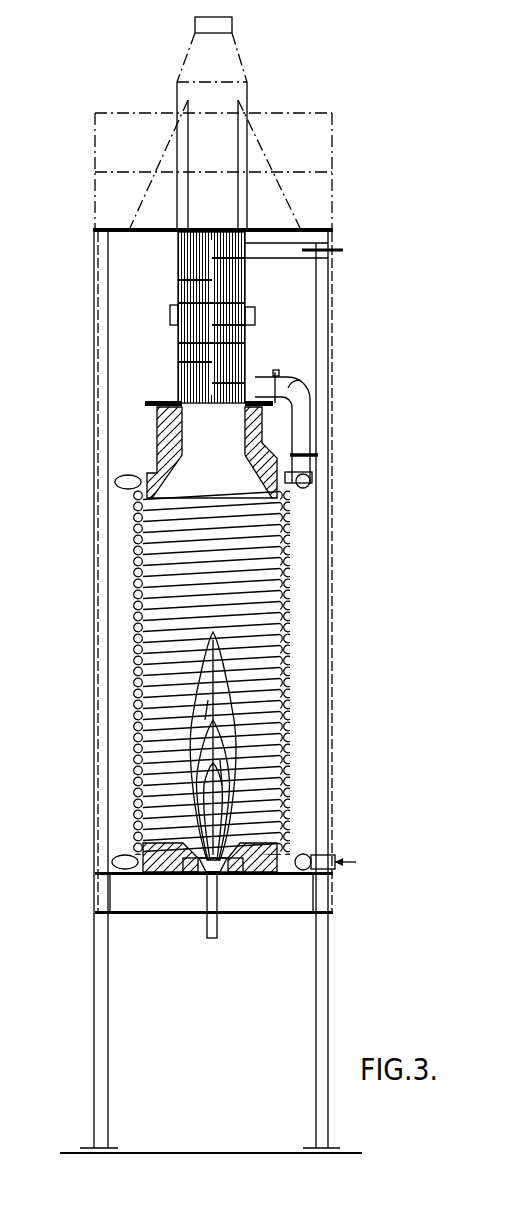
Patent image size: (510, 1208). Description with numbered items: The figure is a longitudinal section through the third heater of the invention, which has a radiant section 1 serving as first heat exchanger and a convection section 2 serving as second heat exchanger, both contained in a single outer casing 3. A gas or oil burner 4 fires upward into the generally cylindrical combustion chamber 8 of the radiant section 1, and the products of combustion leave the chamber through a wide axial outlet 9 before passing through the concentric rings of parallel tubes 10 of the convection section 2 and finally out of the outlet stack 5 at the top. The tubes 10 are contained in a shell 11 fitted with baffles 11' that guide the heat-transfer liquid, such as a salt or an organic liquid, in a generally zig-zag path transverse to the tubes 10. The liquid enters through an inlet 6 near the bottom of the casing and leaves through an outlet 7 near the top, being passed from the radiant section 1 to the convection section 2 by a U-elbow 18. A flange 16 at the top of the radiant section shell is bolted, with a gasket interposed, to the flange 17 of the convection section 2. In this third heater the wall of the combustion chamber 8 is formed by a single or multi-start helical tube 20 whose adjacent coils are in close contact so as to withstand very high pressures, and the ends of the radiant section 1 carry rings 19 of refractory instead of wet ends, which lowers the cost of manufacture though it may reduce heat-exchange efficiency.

The radiant section 1 is at (90, 665).
The convection section 2 is at (256, 339).
The outer casing 3 is at (330, 590).
The burner 4 is at (215, 905).
The outlet stack 5 is at (237, 58).
The inlet 6 is at (333, 857).
The outlet 7 is at (333, 240).
The combustion chamber 8 is at (252, 705).
The axial outlet 9 is at (215, 488).
The tubes 10 is at (245, 352).
The shell 11 is at (300, 320).
The baffles 11' is at (135, 321).
The flange 16 is at (150, 407).
The flange 17 is at (157, 403).
The U-elbow 18 is at (303, 425).
The refractory rings 19 is at (163, 455).
The helical tube 20 is at (135, 790).